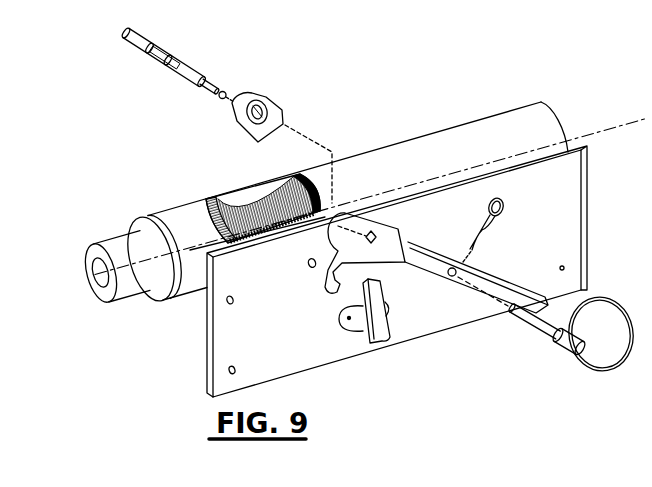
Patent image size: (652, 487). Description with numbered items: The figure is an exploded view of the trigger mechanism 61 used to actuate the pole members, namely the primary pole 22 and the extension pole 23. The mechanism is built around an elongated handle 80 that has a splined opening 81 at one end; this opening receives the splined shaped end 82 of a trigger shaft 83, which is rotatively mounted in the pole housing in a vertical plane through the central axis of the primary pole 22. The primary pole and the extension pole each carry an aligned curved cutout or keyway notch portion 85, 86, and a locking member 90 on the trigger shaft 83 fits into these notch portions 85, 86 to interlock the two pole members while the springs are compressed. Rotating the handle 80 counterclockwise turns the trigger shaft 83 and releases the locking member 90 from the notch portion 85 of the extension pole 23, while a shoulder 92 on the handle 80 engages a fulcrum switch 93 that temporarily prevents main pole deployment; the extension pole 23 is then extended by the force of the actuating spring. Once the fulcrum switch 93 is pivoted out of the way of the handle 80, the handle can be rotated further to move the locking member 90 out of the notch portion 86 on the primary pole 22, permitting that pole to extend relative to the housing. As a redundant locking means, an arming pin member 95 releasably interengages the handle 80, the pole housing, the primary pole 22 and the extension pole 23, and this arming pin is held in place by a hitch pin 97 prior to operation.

The primary pole 22 is at (441, 127).
The extension pole 23 is at (128, 299).
The trigger mechanism 61 is at (450, 268).
The elongated handle 80 is at (488, 268).
The splined opening 81 is at (378, 230).
The splined shaped end 82 is at (226, 84).
The trigger shaft 83 is at (196, 70).
The notch portion 85 is at (223, 217).
The notch portion 86 is at (278, 177).
The locking member 90 is at (277, 112).
The shoulder 92 is at (343, 298).
The fulcrum switch 93 is at (363, 337).
The arming pin member 95 is at (537, 330).
The hitch pin 97 is at (508, 217).